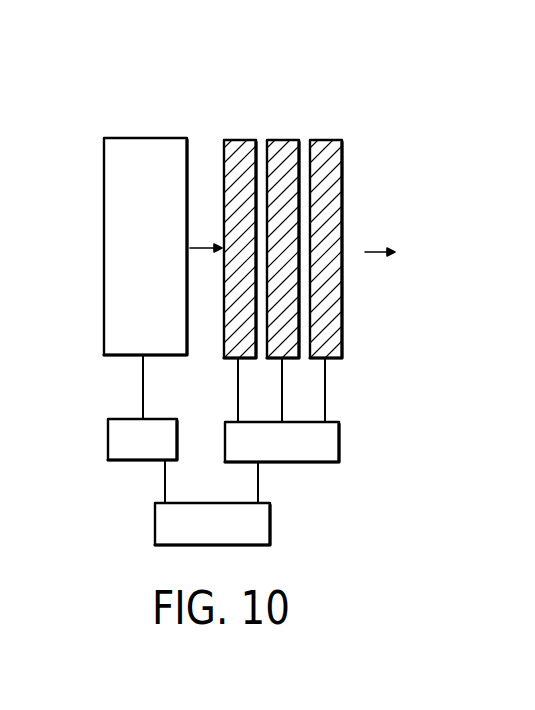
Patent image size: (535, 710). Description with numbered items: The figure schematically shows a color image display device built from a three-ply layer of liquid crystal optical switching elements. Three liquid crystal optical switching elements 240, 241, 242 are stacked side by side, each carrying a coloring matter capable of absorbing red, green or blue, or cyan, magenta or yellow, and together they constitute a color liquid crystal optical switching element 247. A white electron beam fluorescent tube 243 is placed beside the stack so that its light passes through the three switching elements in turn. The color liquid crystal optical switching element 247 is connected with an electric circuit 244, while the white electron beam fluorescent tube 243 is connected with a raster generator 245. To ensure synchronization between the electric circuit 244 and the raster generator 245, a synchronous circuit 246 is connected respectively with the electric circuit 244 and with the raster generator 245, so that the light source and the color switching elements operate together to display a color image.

The liquid crystal optical switching element 240 is at (240, 139).
The liquid crystal optical switching element 241 is at (285, 139).
The liquid crystal optical switching element 242 is at (340, 139).
The white electron beam fluorescent tube 243 is at (104, 262).
The electric circuit 244 is at (341, 445).
The raster generator 245 is at (108, 437).
The synchronous circuit 246 is at (272, 530).
The color liquid crystal optical switching element 247 is at (403, 62).